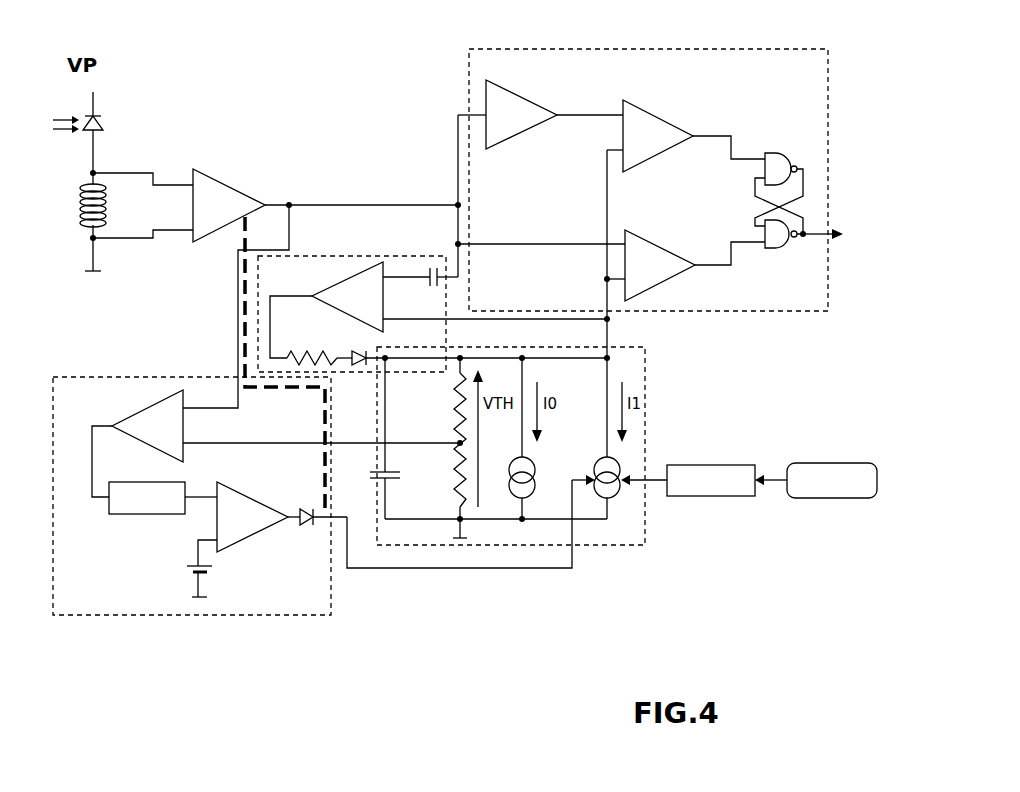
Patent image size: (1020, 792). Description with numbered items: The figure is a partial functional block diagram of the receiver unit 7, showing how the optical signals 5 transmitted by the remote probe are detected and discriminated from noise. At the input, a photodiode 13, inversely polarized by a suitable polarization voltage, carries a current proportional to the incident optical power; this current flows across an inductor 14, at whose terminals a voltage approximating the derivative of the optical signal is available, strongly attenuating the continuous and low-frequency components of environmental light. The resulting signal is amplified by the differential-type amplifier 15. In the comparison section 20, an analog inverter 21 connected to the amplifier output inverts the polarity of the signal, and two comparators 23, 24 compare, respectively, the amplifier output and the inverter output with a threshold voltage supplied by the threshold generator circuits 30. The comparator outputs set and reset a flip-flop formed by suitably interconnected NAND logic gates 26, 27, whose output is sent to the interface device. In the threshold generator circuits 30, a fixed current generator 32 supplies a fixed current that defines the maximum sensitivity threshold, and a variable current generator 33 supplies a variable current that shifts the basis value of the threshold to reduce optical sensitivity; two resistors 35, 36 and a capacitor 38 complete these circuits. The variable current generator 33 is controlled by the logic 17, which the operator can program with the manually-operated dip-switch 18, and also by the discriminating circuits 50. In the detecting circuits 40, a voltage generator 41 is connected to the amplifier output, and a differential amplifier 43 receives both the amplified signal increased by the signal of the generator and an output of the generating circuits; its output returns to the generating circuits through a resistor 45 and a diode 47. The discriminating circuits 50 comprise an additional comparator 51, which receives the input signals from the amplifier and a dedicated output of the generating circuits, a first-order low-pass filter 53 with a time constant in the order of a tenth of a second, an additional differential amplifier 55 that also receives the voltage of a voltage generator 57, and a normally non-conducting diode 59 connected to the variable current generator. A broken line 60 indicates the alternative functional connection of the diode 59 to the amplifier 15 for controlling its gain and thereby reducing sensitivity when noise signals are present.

The optical signals 5 is at (80, 132).
The receiver unit 7 is at (364, 90).
The photodiode 13 is at (145, 121).
The inductor 14 is at (92, 230).
The amplifier 15 is at (230, 200).
The logic 17 is at (720, 480).
The dip-switch 18 is at (828, 473).
The comparison section 20 is at (777, 293).
The analog inverter 21 is at (544, 75).
The comparator 23 is at (727, 307).
The comparator 24 is at (688, 100).
The NAND logic gate 26 is at (827, 270).
The NAND logic gate 27 is at (820, 148).
The threshold generator circuits 30 is at (640, 370).
The fixed current generator 32 is at (582, 521).
The variable current generator 33 is at (618, 488).
The resistor 35 is at (533, 480).
The resistor 36 is at (463, 420).
The capacitor 38 is at (392, 474).
The detecting circuits 40 is at (352, 266).
The voltage generator 41 is at (430, 272).
The differential amplifier 43 is at (356, 293).
The resistor 45 is at (290, 356).
The diode 47 is at (350, 356).
The discriminating circuits 50 is at (105, 563).
The additional comparator 51 is at (143, 432).
The low-pass filter 53 is at (128, 500).
The additional differential amplifier 55 is at (257, 519).
The voltage generator 57 is at (195, 570).
The diode 59 is at (317, 525).
The broken line 60 is at (238, 366).